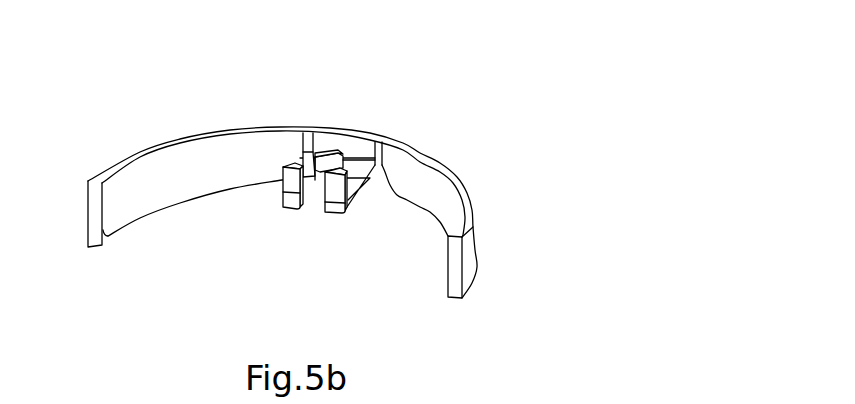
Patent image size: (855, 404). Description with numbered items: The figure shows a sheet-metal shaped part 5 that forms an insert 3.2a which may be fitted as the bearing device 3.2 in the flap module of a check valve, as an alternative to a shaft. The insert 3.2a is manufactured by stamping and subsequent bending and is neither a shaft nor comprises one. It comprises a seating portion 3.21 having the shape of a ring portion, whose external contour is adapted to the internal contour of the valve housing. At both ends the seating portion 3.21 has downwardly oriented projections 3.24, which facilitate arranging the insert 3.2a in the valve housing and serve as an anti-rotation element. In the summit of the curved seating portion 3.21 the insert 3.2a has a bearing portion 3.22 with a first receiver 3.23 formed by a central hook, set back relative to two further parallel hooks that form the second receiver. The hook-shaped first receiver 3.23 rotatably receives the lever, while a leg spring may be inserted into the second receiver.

The bearing device 3.2 is at (322, 155).
The insert 3.2a is at (465, 143).
The seating portion 3.21 is at (140, 155).
The bearing portion 3.22 is at (278, 170).
The first receiver 3.23 is at (330, 150).
The projections 3.24 is at (465, 285).
The sheet-metal shaped part 5 is at (476, 234).